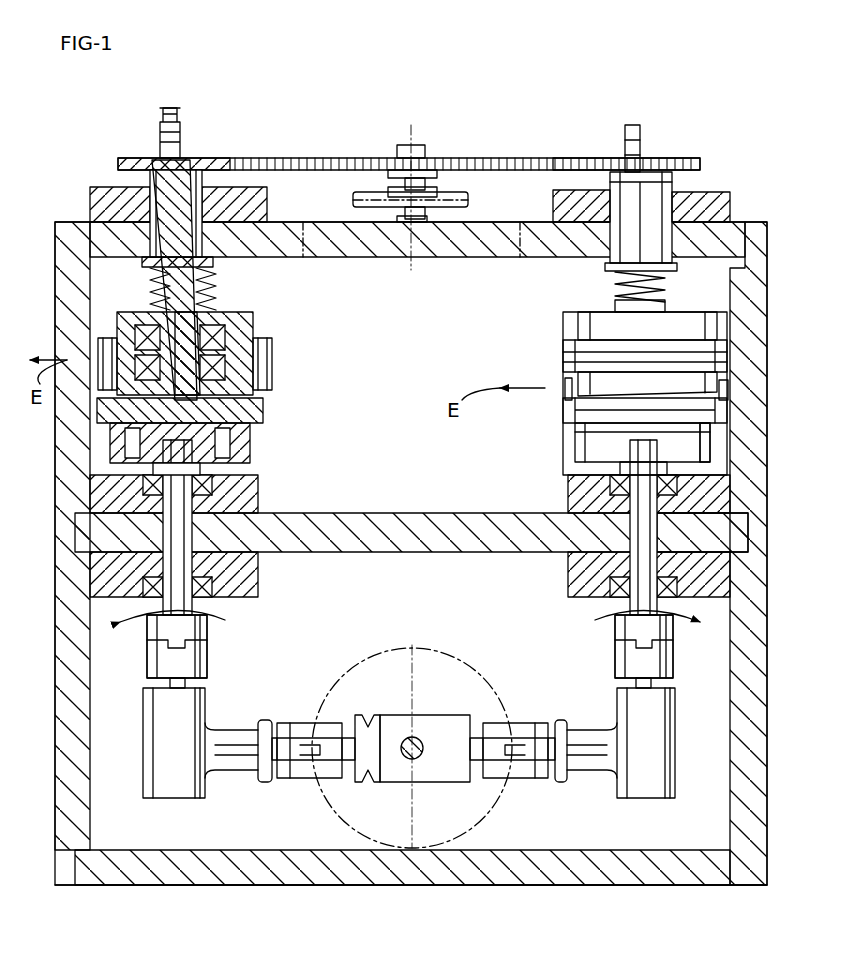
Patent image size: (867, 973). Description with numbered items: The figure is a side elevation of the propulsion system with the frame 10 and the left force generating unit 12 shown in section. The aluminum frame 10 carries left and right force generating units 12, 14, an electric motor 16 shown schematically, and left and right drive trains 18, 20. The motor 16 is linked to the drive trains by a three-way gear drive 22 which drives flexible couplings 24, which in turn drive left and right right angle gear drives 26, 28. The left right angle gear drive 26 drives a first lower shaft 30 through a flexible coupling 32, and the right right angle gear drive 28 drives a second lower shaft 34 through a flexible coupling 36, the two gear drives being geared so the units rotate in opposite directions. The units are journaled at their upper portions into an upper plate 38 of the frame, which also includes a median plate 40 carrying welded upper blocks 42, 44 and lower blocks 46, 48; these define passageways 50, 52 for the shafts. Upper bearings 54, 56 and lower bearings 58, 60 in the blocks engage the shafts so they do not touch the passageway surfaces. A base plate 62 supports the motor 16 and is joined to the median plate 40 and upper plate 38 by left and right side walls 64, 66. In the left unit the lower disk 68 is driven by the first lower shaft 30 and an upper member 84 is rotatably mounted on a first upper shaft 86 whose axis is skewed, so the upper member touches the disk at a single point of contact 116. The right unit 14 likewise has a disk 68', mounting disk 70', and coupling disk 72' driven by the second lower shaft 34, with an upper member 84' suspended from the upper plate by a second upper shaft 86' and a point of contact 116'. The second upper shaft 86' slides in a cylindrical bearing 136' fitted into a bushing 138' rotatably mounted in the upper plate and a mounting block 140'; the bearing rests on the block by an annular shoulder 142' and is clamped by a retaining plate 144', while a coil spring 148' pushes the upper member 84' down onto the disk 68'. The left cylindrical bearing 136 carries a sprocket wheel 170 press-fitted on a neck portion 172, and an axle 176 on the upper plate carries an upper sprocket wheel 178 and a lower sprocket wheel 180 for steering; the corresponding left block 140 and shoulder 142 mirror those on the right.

The frame 10 is at (45, 300).
The left force generating unit 12 is at (268, 374).
The right force generating unit 14 is at (540, 360).
The electric motor 16 is at (430, 640).
The left drive train 18 is at (215, 668).
The right drive train 20 is at (602, 638).
The three-way gear drive 22 is at (410, 716).
The flexible couplings 24 is at (295, 722).
The left right angle gear drive 26 is at (180, 795).
The right right angle gear drive 28 is at (633, 795).
The first lower shaft 30 is at (215, 485).
The flexible coupling 32 is at (200, 636).
The second lower shaft 34 is at (660, 522).
The flexible coupling 36 is at (618, 670).
The upper plate 38 is at (410, 258).
The median plate 40 is at (430, 513).
The upper block 42 is at (260, 497).
The upper block 44 is at (572, 498).
The lower block 46 is at (255, 576).
The lower block 48 is at (570, 578).
The passageway 50 is at (190, 538).
The passageway 52 is at (632, 536).
The upper bearings 54 is at (205, 468).
The upper bearings 56 is at (618, 470).
The lower bearings 58 is at (215, 606).
The lower bearings 60 is at (610, 606).
The base plate 62 is at (118, 887).
The left side wall 64 is at (75, 460).
The right side wall 66 is at (750, 645).
The disk 68 is at (206, 411).
The disk 68' is at (619, 414).
The mounting disk 70' is at (595, 442).
The coupling disk 72' is at (733, 442).
The upper member 84 is at (214, 353).
The upper member 84' is at (612, 354).
The first upper shaft 86 is at (200, 287).
The second upper shaft 86' is at (612, 284).
The point of contact 116 is at (218, 367).
The point of contact 116' is at (670, 380).
The left cylindrical bearing 136 is at (90, 204).
The cylindrical bearing 136' is at (683, 194).
The bushing 138' is at (728, 202).
The support block 140 is at (266, 200).
The mounting block 140' is at (551, 206).
The adjusting plate 142 is at (384, 171).
The annular shoulder 142' is at (609, 179).
The retaining plate 144' is at (667, 269).
The coil spring 148' is at (669, 303).
The sprocket wheel 170 is at (155, 158).
The neck portion 172 is at (217, 158).
The axle 176 is at (427, 143).
The upper sprocket wheel 178 is at (437, 160).
The lower sprocket wheel 180 is at (455, 196).